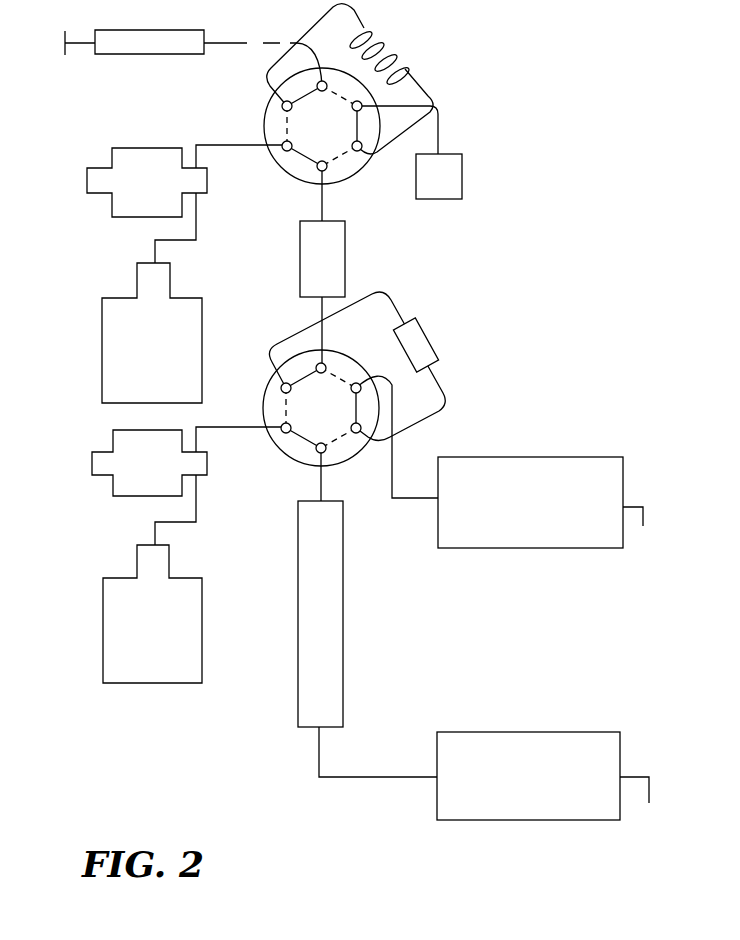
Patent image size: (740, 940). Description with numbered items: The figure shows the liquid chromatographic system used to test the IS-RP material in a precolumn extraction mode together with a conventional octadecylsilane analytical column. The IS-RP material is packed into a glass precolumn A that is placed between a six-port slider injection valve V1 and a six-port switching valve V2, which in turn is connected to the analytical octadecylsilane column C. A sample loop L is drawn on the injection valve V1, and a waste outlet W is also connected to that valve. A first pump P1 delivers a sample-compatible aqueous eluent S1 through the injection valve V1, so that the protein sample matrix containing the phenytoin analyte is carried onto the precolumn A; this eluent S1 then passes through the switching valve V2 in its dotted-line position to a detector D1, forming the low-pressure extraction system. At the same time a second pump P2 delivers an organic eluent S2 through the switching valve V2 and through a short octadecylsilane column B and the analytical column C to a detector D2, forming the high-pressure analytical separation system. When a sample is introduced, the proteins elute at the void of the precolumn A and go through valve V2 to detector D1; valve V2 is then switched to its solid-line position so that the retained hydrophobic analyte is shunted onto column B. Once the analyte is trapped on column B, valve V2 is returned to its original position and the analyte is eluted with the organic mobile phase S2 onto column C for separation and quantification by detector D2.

The sample loop L is at (350, 79).
The injection valve V1 is at (322, 126).
The waste W is at (439, 176).
The pump P1 is at (147, 182).
The aqueous eluent S1 is at (152, 333).
The precolumn A is at (322, 259).
The octadecylsilane column B is at (357, 366).
The switching valve V2 is at (321, 408).
The pump P2 is at (149, 463).
The organic mobile phase S2 is at (152, 614).
The analytical column C is at (320, 614).
The detector D1 is at (540, 502).
The detector D2 is at (543, 776).